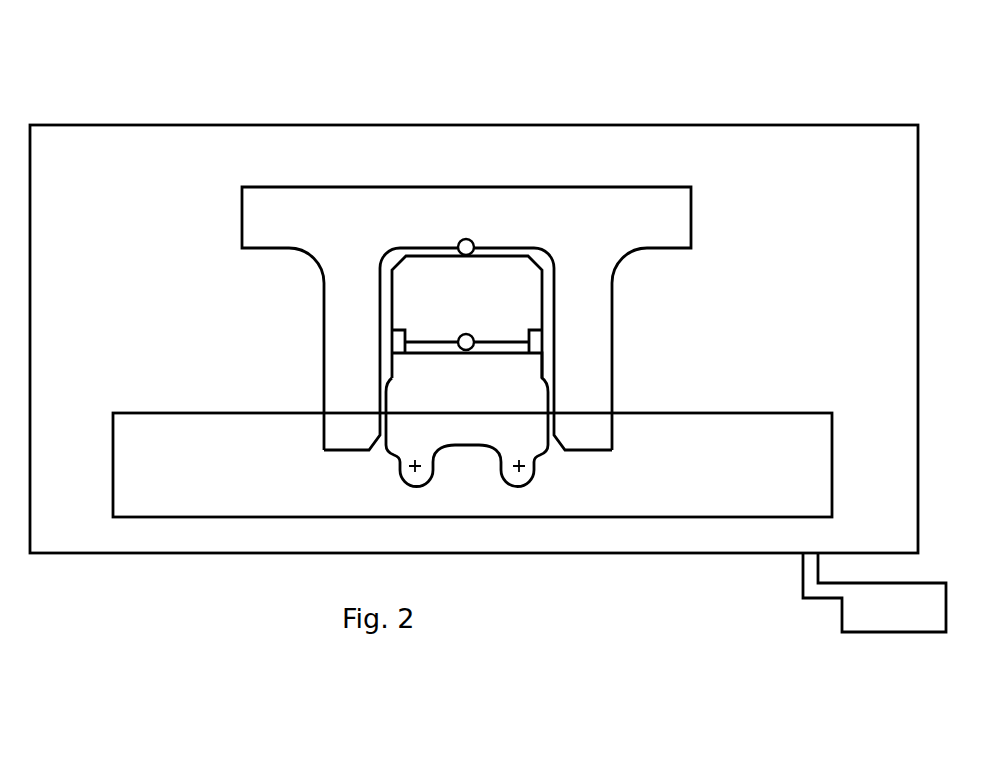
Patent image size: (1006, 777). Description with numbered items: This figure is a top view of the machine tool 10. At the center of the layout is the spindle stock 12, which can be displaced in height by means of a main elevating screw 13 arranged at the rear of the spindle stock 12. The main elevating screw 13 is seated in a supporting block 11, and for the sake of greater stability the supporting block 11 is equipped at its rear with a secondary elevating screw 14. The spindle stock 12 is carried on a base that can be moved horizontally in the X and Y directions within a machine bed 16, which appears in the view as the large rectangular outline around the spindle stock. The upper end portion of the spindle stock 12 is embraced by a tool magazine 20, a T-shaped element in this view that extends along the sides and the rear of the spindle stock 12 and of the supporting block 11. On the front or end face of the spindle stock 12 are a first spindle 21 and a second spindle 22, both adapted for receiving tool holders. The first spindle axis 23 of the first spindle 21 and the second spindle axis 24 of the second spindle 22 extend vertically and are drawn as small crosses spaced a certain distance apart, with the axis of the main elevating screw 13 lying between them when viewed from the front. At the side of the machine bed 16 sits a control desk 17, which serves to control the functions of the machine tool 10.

The machine tool 10 is at (788, 71).
The supporting block 11 is at (536, 263).
The spindle stock 12 is at (534, 401).
The main elevating screw 13 is at (468, 334).
The secondary elevating screw 14 is at (472, 237).
The machine bed 16 is at (824, 434).
The control desk 17 is at (937, 607).
The tool magazine 20 is at (692, 210).
The first spindle 21 is at (401, 473).
The second spindle 22 is at (536, 477).
The first spindle axis 23 is at (421, 468).
The second spindle axis 24 is at (511, 475).